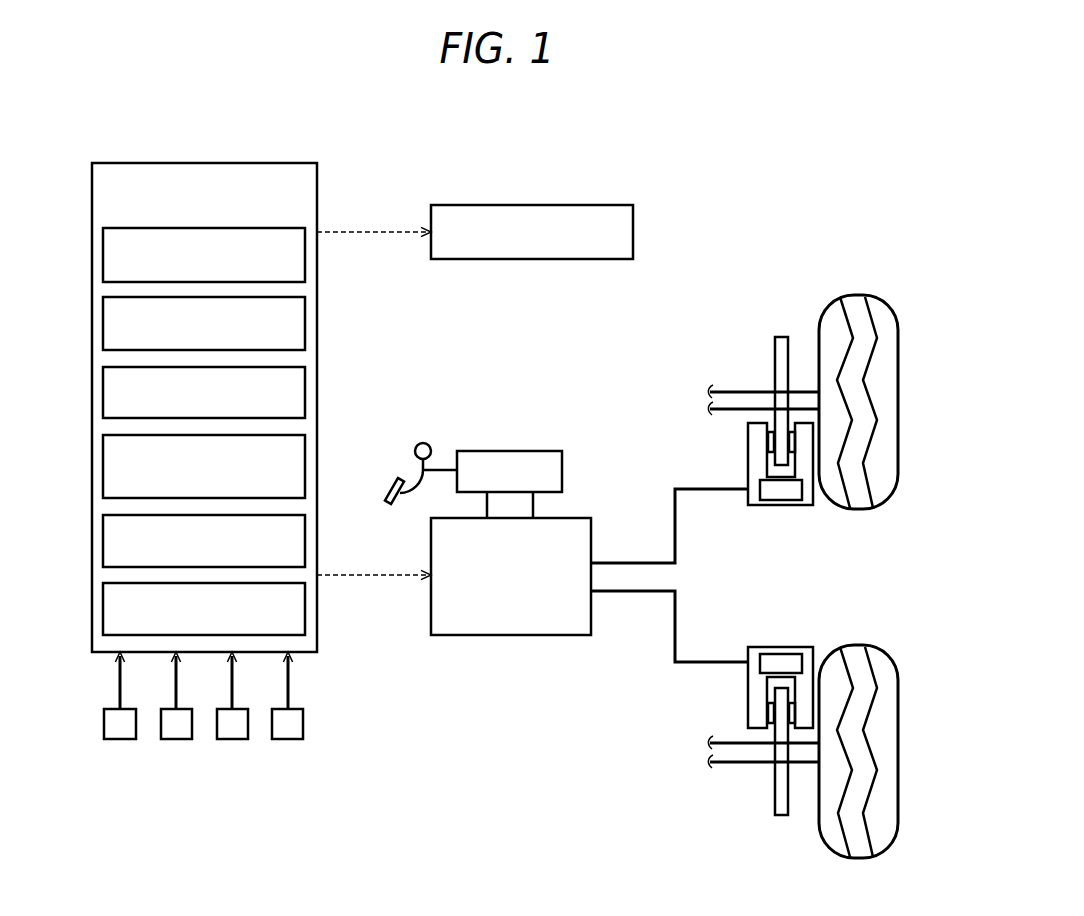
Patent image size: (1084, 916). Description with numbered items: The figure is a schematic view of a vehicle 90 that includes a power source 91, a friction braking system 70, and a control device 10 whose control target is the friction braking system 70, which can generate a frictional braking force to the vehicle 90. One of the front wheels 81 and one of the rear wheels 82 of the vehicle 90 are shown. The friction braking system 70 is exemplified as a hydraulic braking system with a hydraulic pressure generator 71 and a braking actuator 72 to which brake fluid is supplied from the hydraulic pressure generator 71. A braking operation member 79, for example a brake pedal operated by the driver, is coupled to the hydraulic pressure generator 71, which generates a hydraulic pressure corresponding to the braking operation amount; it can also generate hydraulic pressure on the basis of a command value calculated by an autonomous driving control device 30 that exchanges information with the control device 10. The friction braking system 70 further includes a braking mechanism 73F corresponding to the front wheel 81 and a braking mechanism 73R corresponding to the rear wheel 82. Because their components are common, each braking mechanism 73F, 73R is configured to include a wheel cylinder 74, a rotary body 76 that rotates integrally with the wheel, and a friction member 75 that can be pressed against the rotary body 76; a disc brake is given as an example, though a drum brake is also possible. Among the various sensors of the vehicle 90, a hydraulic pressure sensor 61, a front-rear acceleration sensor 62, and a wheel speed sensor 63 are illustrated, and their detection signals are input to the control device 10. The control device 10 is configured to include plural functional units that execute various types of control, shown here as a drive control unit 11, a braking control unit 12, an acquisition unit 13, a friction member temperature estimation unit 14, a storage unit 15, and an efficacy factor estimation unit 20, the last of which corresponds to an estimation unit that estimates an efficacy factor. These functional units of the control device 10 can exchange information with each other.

The control device 10 is at (257, 163).
The drive control unit 11 is at (103, 257).
The braking control unit 12 is at (103, 326).
The acquisition unit 13 is at (103, 394).
The friction member temperature estimation unit 14 is at (103, 463).
The storage unit 15 is at (103, 533).
The efficacy factor estimation unit 20 is at (103, 601).
The autonomous driving control device 30 is at (288, 739).
The hydraulic pressure sensor 61 is at (119, 739).
The front-rear acceleration sensor 62 is at (176, 739).
The wheel speed sensor 63 is at (232, 739).
The friction braking system 70 is at (413, 689).
The hydraulic pressure generator 71 is at (512, 451).
The braking actuator 72 is at (507, 637).
The braking mechanism 73F is at (826, 519).
The braking mechanism 73R is at (820, 624).
The wheel cylinder 74 is at (781, 505).
The friction member 75 is at (772, 447).
The rotary body 76 is at (775, 350).
The braking operation member 79 is at (385, 491).
The front wheel 81 is at (899, 399).
The rear wheel 82 is at (899, 748).
The vehicle 90 is at (701, 123).
The power source 91 is at (575, 205).